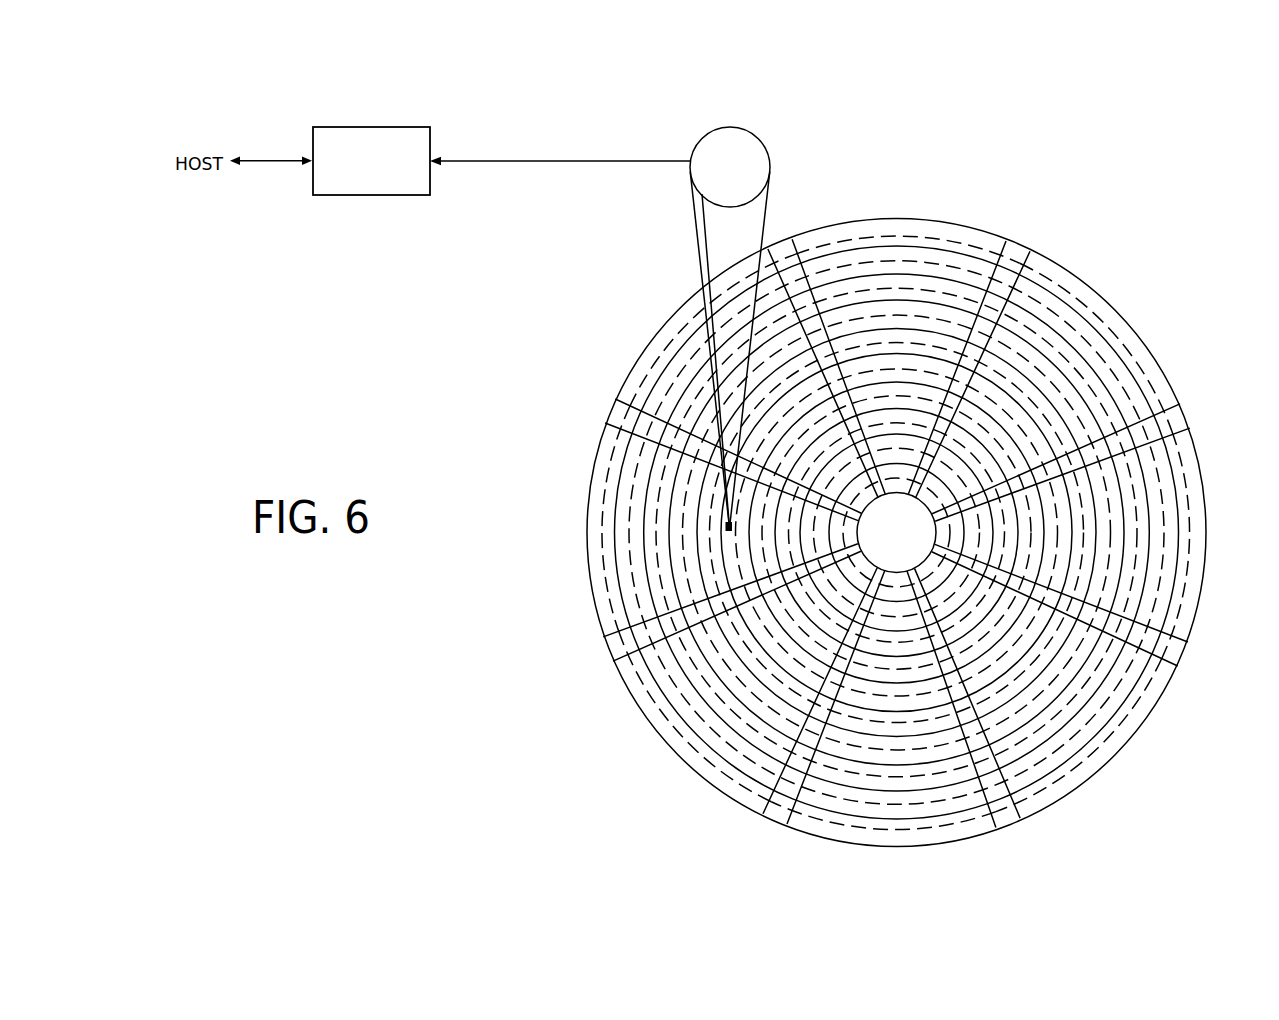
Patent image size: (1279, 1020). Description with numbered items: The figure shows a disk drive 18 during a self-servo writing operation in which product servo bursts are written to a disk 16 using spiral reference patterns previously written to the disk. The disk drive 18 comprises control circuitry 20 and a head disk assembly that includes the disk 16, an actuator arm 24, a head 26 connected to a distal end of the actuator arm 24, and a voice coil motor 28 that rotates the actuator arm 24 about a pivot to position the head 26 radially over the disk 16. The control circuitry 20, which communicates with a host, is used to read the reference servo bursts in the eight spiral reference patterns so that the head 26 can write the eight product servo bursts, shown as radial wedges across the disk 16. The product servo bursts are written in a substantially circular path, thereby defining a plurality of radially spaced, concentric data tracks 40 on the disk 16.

The disk 16 is at (1068, 251).
The disk drive 18 is at (186, 102).
The control circuitry 20 is at (373, 127).
The actuator arm 24 is at (698, 243).
The head 26 is at (728, 549).
The voice coil motor 28 is at (733, 122).
The data tracks 40 is at (969, 243).